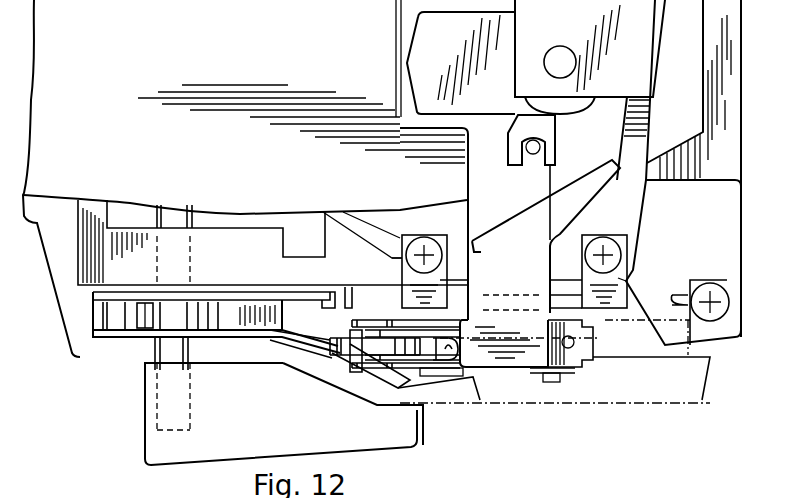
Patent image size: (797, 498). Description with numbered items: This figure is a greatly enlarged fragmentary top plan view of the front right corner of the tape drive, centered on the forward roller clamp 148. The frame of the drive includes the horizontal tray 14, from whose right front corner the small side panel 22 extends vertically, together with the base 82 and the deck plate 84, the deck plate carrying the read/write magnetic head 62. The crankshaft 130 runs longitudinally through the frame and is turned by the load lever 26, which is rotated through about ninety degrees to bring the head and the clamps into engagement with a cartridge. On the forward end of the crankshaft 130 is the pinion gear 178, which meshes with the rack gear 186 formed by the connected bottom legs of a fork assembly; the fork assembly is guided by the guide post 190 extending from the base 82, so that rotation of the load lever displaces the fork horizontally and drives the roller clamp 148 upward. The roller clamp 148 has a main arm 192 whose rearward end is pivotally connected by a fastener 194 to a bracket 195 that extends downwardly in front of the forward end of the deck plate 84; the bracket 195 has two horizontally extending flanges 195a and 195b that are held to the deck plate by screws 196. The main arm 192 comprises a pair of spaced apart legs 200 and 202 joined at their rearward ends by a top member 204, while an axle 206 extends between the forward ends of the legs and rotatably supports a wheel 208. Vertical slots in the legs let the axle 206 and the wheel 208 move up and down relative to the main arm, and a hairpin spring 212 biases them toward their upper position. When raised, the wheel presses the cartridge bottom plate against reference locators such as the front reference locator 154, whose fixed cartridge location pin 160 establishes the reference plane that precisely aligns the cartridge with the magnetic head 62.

The tray 14 is at (255, 211).
The side panel 22 is at (668, 404).
The load lever 26 is at (393, 437).
The read/write magnetic head 62 is at (423, 52).
The base 82 is at (715, 336).
The deck plate 84 is at (640, 233).
The crankshaft 130 is at (185, 348).
The roller clamp 148 is at (377, 375).
The reference locator 154 is at (498, 350).
The cartridge location pin 160 is at (443, 343).
The pinion gear 178 is at (145, 323).
The rack gear 186 is at (98, 318).
The guide post 190 is at (335, 290).
The main arm 192 is at (592, 371).
The fastener 194 is at (557, 382).
The bracket 195 is at (567, 302).
The flange 195a is at (402, 236).
The flange 195b is at (618, 278).
The screw 196 is at (433, 243).
The leg 200 is at (368, 334).
The leg 202 is at (357, 368).
The top member 204 is at (573, 333).
The axle 206 is at (350, 323).
The wheel 208 is at (332, 355).
The hairpin spring 212 is at (408, 358).